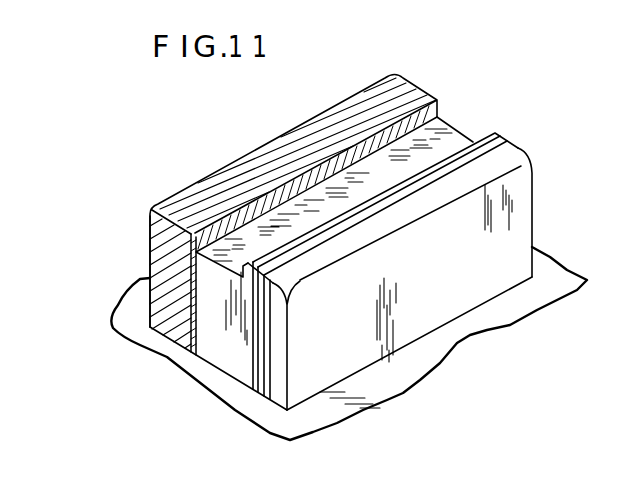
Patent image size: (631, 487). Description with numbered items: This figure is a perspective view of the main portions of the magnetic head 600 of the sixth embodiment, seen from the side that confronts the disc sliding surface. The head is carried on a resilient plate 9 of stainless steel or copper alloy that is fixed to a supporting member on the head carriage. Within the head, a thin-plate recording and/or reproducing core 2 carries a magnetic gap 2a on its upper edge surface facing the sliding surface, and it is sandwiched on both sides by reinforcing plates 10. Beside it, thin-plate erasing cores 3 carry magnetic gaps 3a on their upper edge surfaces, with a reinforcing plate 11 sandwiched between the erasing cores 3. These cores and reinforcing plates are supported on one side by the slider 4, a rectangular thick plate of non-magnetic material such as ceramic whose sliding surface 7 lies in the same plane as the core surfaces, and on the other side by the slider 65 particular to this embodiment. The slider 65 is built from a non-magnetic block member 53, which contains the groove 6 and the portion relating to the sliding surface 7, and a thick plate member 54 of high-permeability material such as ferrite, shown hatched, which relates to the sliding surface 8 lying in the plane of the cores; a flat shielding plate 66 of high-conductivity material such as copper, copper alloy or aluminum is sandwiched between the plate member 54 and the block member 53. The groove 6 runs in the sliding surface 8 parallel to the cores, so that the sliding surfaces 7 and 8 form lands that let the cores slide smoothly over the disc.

The recording and/or reproducing core 2 is at (415, 193).
The magnetic gap 2a is at (397, 205).
The erasing cores 3 is at (355, 222).
The magnetic gaps 3a is at (380, 232).
The slider 4 is at (523, 231).
The groove 6 is at (453, 137).
The sliding surface 7 is at (305, 276).
The sliding surface 8 is at (226, 180).
The resilient plate 9 is at (472, 328).
The reinforcing plates 10 is at (482, 156).
The reinforcing plate 11 is at (313, 257).
The block member 53 is at (217, 350).
The plate member 54 is at (162, 312).
The slider 65 is at (187, 432).
The shielding plate 66 is at (190, 342).
The magnetic head 600 is at (533, 244).